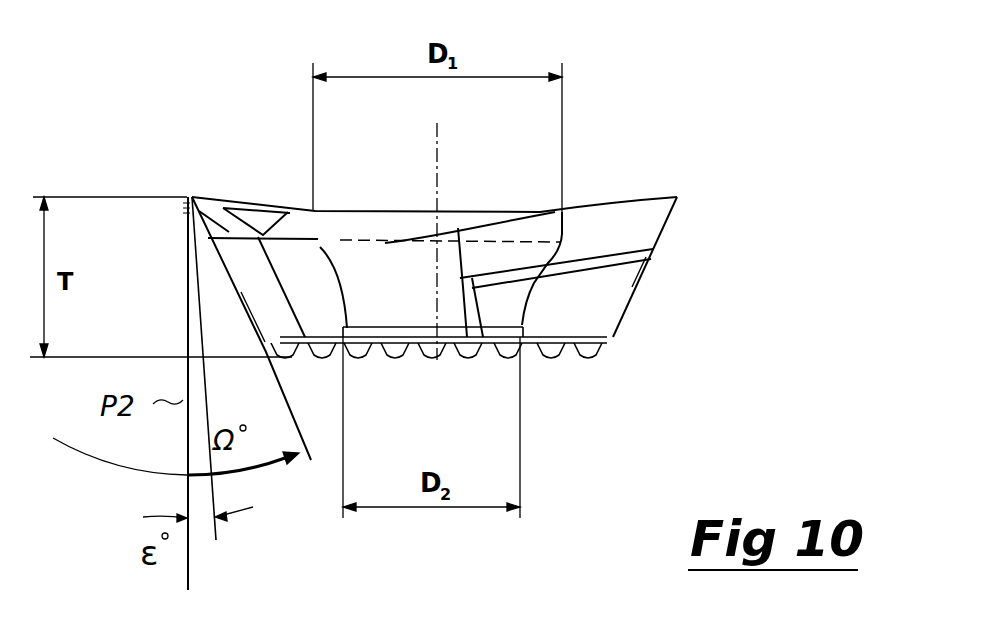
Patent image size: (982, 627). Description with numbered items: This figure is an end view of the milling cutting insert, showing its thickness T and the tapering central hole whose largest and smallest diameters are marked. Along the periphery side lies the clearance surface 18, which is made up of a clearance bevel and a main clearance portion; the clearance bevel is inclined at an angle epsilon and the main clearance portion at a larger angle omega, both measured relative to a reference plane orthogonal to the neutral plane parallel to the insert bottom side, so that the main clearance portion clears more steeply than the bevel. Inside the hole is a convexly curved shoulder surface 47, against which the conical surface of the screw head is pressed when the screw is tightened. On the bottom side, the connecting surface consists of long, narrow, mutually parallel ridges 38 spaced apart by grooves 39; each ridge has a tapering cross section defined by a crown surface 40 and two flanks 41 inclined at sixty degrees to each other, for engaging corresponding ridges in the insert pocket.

The clearance surface 18 is at (207, 257).
The convexly curved shoulder surface 47 is at (340, 270).
The flank 41 is at (387, 358).
The crown surface 40 is at (396, 360).
The groove 39 is at (495, 356).
The ridge 38 is at (550, 350).